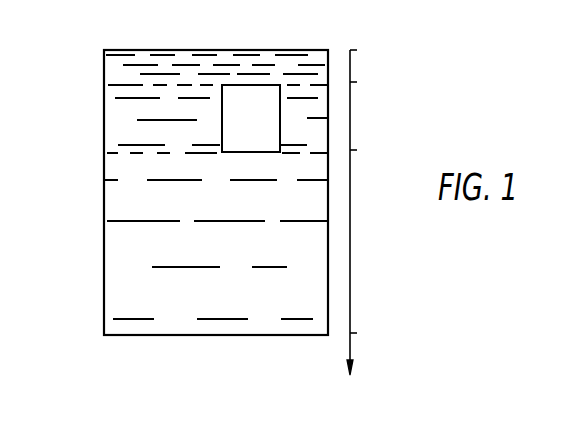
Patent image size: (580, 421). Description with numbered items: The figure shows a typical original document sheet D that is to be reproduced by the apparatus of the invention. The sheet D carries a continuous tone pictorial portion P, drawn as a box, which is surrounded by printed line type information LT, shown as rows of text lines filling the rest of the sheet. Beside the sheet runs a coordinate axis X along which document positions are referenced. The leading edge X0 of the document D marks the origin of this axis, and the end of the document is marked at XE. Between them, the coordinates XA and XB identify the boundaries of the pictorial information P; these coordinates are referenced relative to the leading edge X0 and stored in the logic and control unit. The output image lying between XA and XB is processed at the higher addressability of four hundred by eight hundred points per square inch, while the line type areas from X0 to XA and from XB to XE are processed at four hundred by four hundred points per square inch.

The original document sheet D is at (89, 41).
The printed line type information LT is at (118, 70).
The continuous tone pictorial portion P is at (256, 128).
The document position coordinate axis X is at (345, 228).
The leading edge of document X0 is at (367, 52).
The first boundary of pictorial information XA is at (367, 86).
The second boundary of pictorial information XB is at (367, 154).
The end of document XE is at (366, 337).